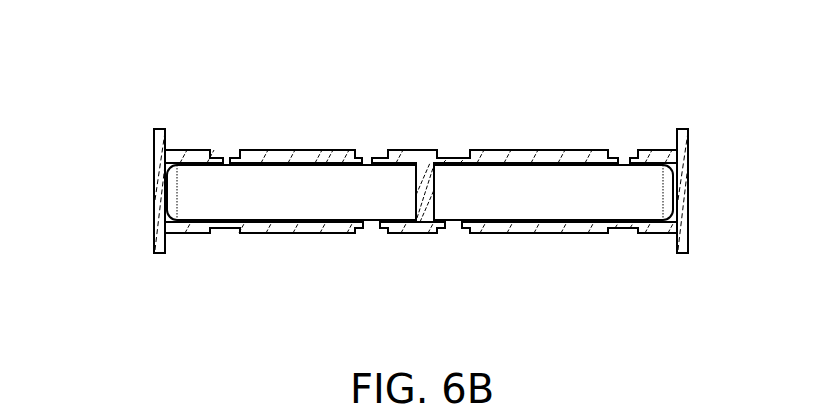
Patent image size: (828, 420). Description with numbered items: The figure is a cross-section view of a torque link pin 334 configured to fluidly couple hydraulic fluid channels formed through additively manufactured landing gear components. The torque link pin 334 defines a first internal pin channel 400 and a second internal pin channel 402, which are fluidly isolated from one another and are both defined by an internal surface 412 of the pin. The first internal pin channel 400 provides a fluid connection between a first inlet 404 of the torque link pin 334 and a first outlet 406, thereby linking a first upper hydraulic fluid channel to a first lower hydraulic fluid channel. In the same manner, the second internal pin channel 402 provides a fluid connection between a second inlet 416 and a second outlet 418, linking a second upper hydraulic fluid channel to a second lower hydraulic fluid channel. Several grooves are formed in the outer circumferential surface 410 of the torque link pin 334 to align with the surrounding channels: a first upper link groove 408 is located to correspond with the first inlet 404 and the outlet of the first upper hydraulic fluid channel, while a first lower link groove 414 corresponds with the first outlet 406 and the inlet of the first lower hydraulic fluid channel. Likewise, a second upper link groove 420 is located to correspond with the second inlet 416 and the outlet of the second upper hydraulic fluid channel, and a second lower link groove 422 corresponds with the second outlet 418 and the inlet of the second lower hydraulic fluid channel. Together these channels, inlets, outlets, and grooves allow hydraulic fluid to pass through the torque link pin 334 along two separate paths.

The torque link pin 334 is at (124, 90).
The first internal pin channel 400 is at (300, 195).
The second internal pin channel 402 is at (531, 195).
The first inlet 404 is at (223, 165).
The first outlet 406 is at (372, 233).
The first upper link groove 408 is at (222, 235).
The outer circumferential surface 410 is at (408, 150).
The internal surface 412 is at (322, 158).
The first lower link groove 414 is at (367, 150).
The second inlet 416 is at (623, 160).
The second outlet 418 is at (454, 233).
The second upper link groove 420 is at (627, 229).
The second lower link groove 422 is at (452, 150).